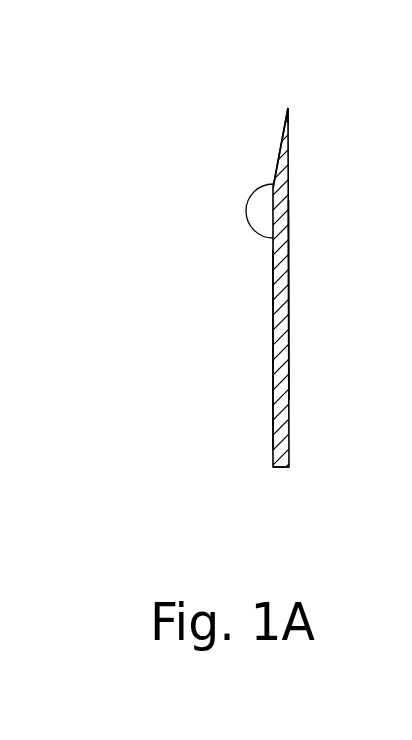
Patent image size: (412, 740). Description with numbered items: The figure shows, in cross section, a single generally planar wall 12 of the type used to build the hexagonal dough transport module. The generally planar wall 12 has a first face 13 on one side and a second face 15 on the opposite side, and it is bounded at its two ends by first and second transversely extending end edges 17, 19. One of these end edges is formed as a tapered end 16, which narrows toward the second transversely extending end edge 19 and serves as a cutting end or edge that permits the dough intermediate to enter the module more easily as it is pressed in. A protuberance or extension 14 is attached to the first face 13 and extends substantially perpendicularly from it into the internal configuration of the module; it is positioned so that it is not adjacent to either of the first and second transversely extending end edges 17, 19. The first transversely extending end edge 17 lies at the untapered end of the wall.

The generally planar wall 12 is at (285, 355).
The first face 13 is at (273, 343).
The protuberance or extension 14 is at (265, 207).
The second face 15 is at (288, 270).
The tapered end 16 is at (285, 117).
The first transversely extending end edge 17 is at (281, 467).
The second transversely extending end edge 19 is at (288, 114).